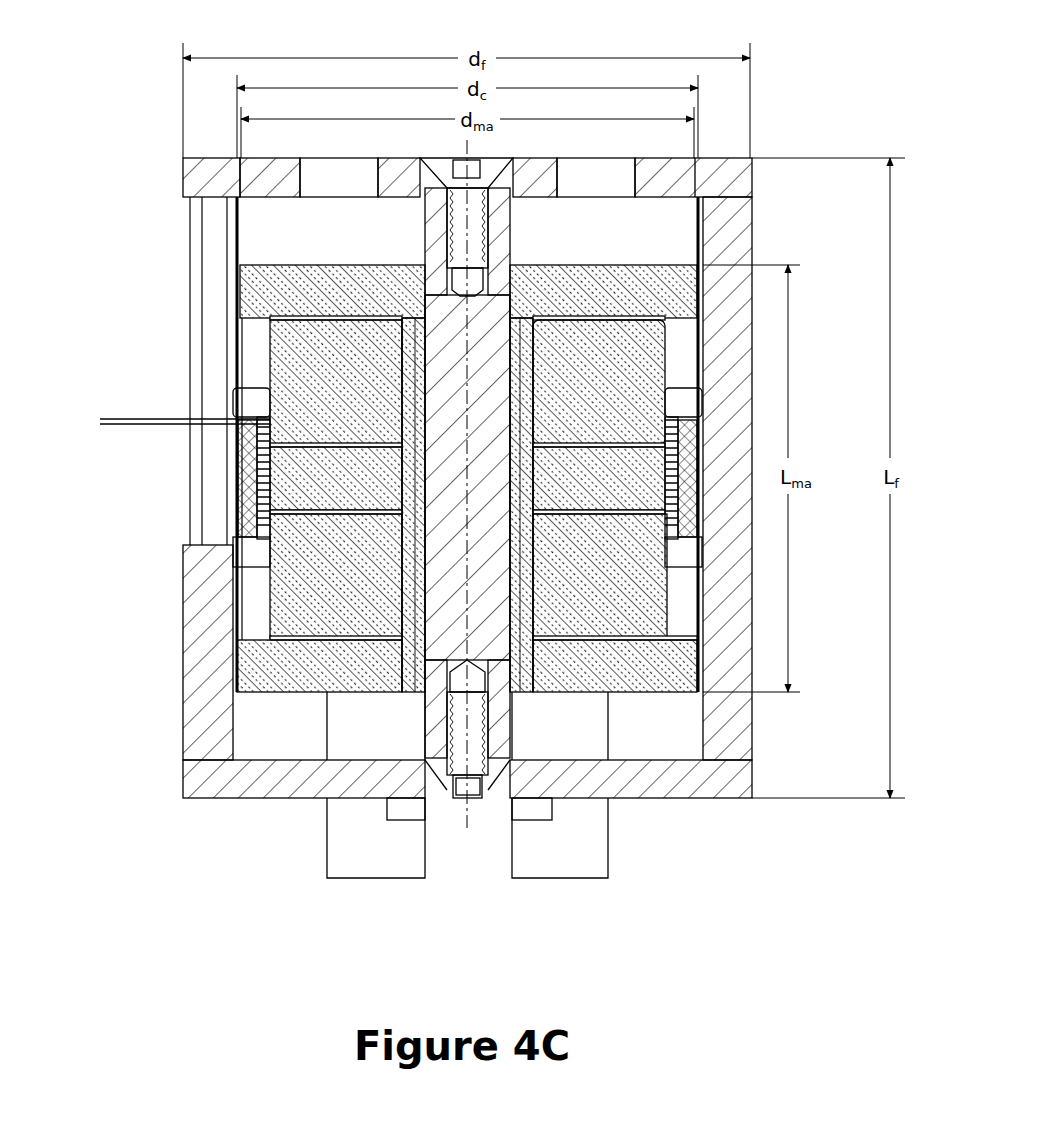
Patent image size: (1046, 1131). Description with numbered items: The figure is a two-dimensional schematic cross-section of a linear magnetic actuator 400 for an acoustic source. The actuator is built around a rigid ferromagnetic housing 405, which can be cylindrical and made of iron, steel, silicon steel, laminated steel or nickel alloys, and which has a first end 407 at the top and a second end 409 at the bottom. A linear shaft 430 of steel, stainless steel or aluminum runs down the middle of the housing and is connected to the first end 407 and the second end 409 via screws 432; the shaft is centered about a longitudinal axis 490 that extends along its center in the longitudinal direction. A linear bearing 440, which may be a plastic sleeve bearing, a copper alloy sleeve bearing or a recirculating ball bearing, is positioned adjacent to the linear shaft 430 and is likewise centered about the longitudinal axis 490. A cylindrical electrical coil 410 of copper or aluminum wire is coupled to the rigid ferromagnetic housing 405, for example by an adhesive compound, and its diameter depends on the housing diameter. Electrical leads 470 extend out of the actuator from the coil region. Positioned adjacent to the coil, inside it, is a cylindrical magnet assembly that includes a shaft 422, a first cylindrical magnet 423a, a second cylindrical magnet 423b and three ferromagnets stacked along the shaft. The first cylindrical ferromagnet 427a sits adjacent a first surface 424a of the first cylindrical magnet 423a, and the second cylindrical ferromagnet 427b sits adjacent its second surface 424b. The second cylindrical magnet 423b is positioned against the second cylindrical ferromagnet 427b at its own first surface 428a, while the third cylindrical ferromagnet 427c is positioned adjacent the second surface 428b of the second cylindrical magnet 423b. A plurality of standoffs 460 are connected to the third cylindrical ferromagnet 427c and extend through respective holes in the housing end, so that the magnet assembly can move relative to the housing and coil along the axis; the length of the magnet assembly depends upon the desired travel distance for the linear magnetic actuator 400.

The linear magnetic actuator 400 is at (838, 89).
The rigid ferromagnetic housing 405 is at (207, 737).
The first end 407 is at (205, 183).
The second end 409 is at (232, 783).
The cylindrical electrical coil 410 is at (247, 502).
The shaft 422 is at (410, 570).
The first cylindrical magnet 423a is at (285, 372).
The second cylindrical magnet 423b is at (303, 573).
The first surface 424a is at (310, 318).
The second surface 424b is at (320, 447).
The first cylindrical ferromagnet 427a is at (275, 290).
The second cylindrical ferromagnet 427b is at (293, 477).
The third cylindrical ferromagnet 427c is at (255, 675).
The first surface 428a is at (293, 512).
The second surface 428b is at (297, 642).
The linear shaft 430 is at (442, 648).
The screws 432 is at (472, 737).
The linear bearing 440 is at (512, 605).
The standoffs 460 is at (342, 858).
The electrical leads 470 is at (100, 420).
The longitudinal axis 490 is at (465, 810).